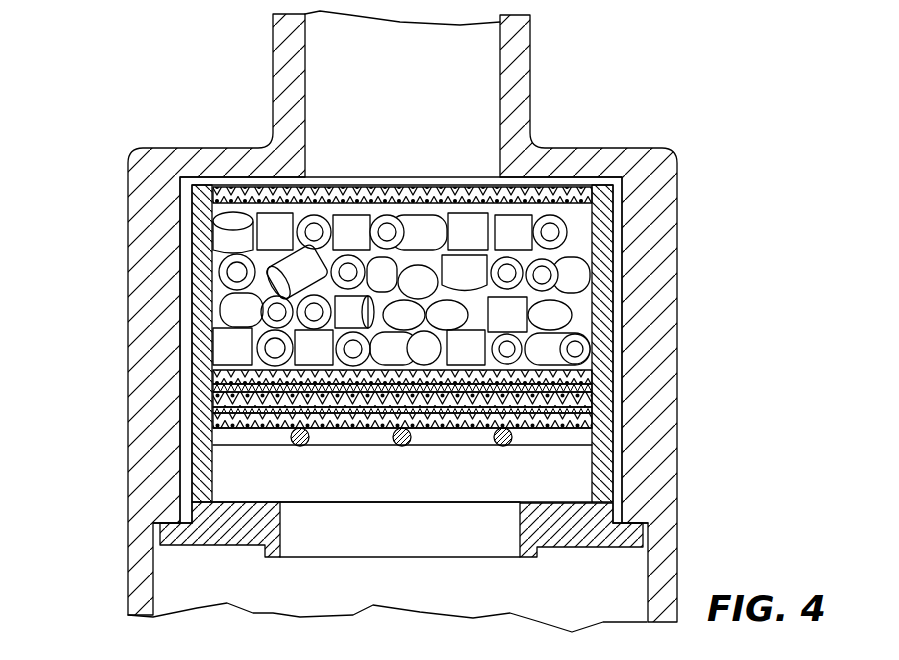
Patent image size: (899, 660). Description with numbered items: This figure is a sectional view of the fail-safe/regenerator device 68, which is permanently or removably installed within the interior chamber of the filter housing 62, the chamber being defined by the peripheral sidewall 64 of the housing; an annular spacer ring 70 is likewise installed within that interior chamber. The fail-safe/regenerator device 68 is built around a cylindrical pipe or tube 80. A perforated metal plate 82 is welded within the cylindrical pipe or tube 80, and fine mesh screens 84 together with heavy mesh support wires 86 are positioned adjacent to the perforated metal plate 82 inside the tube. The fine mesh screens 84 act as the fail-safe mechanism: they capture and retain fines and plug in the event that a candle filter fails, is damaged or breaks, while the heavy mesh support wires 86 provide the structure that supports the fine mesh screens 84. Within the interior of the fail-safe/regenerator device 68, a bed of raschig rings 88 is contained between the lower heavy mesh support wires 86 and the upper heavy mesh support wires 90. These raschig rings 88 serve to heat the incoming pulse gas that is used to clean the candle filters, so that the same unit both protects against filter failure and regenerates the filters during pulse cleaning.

The filter housing 62 is at (601, 107).
The peripheral sidewall 64 is at (662, 291).
The fail-safe/regenerator device 68 is at (392, 168).
The annular spacer ring 70 is at (566, 524).
The cylindrical pipe or tube 80 is at (603, 257).
The perforated metal plate 82 is at (453, 440).
The fine mesh screens 84 is at (593, 391).
The heavy mesh support wires 86 is at (213, 378).
The raschig rings 88 is at (222, 272).
The heavy mesh support wires 90 is at (226, 196).